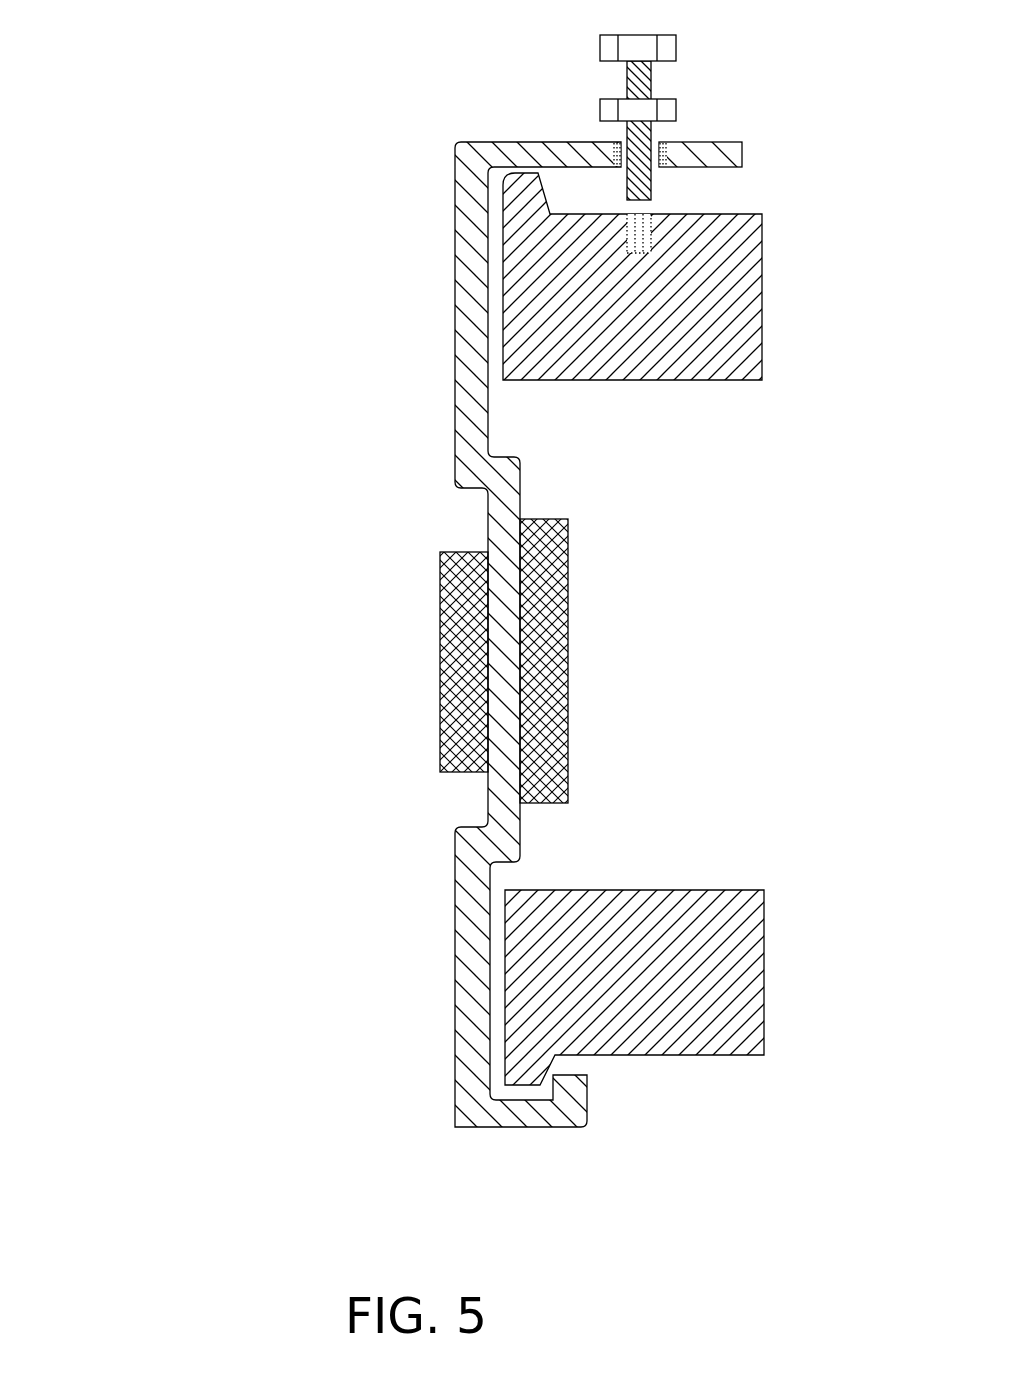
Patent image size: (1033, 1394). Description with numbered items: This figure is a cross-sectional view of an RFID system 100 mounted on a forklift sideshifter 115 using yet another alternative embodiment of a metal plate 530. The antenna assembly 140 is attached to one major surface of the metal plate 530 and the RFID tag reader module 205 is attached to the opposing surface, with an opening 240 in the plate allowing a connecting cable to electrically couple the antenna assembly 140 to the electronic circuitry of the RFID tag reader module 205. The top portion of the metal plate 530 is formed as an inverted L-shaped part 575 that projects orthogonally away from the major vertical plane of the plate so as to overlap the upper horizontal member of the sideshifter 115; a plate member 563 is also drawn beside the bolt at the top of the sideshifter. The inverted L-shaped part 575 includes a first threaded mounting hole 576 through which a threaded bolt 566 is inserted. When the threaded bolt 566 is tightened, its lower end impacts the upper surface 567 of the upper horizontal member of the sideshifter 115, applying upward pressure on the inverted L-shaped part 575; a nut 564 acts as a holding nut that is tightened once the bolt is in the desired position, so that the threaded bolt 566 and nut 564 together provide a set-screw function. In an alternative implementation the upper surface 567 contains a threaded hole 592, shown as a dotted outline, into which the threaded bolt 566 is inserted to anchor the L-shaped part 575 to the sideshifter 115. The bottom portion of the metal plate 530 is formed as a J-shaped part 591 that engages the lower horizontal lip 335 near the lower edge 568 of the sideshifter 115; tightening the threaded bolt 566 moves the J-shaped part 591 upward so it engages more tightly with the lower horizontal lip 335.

The RFID system 100 is at (121, 106).
The sideshifter 115 is at (820, 289).
The antenna assembly 140 is at (440, 662).
The RFID tag reader module 205 is at (572, 650).
The opening 240 is at (510, 175).
The lower horizontal lip 335 is at (513, 1088).
The metal plate 530 is at (311, 313).
The retaining plate 563 is at (707, 128).
The nut 564 is at (602, 108).
The threaded bolt 566 is at (636, 35).
The upper surface 567 is at (759, 202).
The lower edge of panel 568 is at (696, 1066).
The inverted L-shaped part 575 is at (511, 97).
The first threaded mounting hole 576 is at (606, 134).
The J-shaped part 591 is at (523, 1154).
The threaded hole 592 is at (618, 202).